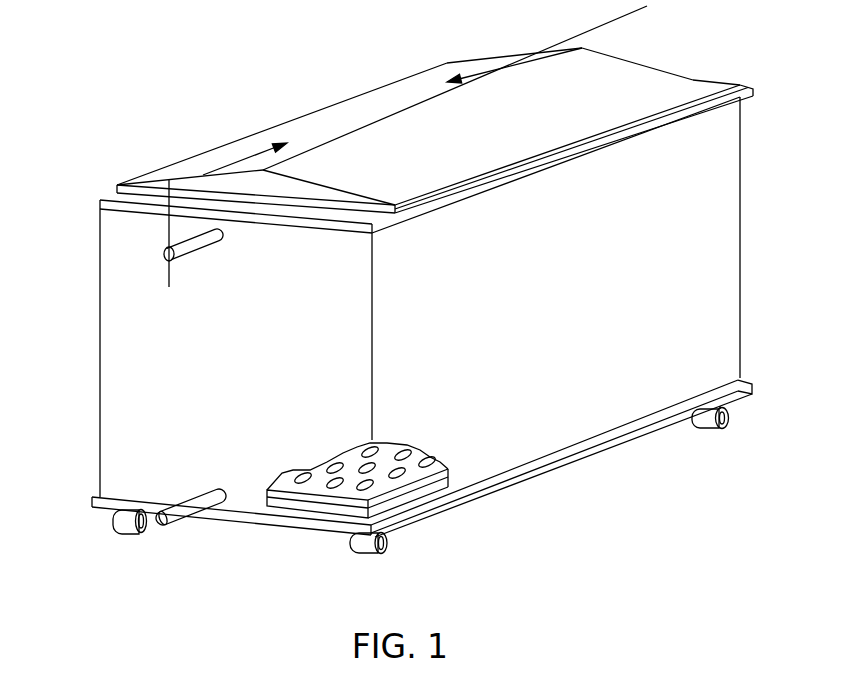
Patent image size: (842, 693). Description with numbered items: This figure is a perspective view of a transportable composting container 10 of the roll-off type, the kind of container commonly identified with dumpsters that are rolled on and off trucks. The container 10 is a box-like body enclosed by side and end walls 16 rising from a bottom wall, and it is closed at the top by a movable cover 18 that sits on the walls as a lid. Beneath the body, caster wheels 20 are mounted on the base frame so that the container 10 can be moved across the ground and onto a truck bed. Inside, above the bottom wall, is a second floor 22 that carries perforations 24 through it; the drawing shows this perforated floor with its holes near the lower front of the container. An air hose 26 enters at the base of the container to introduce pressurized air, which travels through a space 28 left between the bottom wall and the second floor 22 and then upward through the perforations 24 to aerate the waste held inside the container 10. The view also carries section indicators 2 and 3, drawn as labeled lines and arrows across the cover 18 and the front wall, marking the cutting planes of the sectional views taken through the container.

The transportable composting container 10 is at (90, 406).
The side and end walls 16 is at (122, 254).
The movable cover 18 is at (465, 139).
The caster wheels 20 is at (707, 424).
The second floor 22 is at (437, 462).
The perforations 24 is at (373, 452).
The air hose 26 is at (177, 513).
The space 28 is at (403, 495).
The section line 2- 2 is at (647, 6).
The section line 3- 3 is at (396, 101).